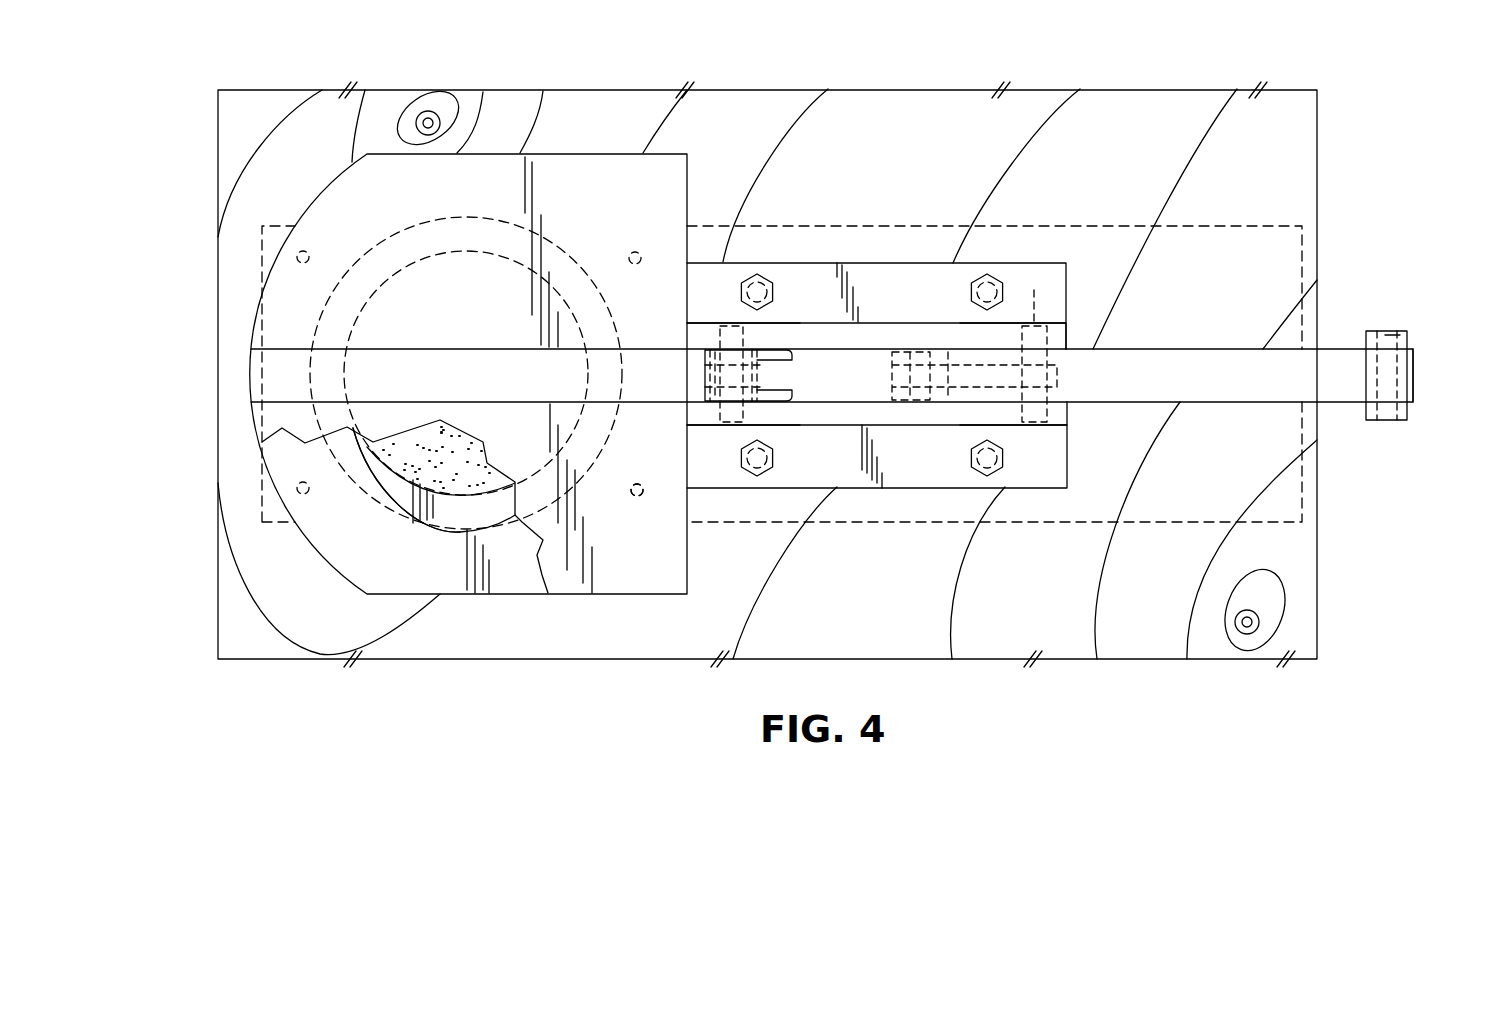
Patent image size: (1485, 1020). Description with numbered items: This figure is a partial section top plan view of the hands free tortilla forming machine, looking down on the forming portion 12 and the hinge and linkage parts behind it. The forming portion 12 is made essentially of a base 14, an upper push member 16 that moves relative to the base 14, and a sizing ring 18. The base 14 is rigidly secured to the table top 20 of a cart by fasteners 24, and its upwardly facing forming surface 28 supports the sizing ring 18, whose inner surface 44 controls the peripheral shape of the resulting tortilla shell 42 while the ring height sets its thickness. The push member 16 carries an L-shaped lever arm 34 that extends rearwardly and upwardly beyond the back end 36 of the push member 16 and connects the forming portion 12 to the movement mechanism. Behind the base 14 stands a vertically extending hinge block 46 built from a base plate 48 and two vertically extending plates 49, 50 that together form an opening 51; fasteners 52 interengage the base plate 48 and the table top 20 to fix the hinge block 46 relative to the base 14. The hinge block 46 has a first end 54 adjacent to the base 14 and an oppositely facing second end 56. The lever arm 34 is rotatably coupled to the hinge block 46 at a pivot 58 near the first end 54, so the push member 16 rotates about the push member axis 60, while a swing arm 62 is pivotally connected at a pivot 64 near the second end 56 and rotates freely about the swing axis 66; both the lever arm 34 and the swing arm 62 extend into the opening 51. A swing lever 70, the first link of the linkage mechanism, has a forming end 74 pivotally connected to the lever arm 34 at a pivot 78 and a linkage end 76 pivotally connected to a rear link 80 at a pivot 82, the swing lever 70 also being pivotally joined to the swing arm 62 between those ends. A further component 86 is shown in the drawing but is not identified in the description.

The forming portion 12 is at (491, 132).
The base 14 is at (343, 577).
The upper push member 16 is at (581, 150).
The sizing ring 18 is at (487, 512).
The table top 20 is at (1297, 602).
The fasteners 24 is at (300, 490).
The forming surface 28 is at (432, 555).
The lever arm 34 is at (280, 360).
The back end 36 is at (683, 208).
The tortilla shell 42 is at (410, 465).
The inner surface 44 is at (370, 435).
The hinge block 46 is at (946, 268).
The base plate 48 is at (1015, 478).
The vertically extending plate 49 is at (920, 335).
The vertically extending plate 50 is at (1068, 413).
The opening 51 is at (845, 362).
The fasteners 52 is at (766, 274).
The first end 54 is at (688, 338).
The second end 56 is at (1070, 347).
The pivot 58 is at (718, 418).
The push member axis 60 is at (738, 466).
The swing arm 62 is at (966, 382).
The pivot 64 is at (1037, 427).
The swing axis 66 is at (1042, 296).
The swing lever 70 is at (1330, 405).
The forming end 74 is at (765, 370).
The linkage end 76 is at (1410, 372).
The pivot 78 is at (718, 386).
The rear link 80 is at (1410, 422).
The pivot 82 is at (1386, 332).
The key 86 is at (925, 392).